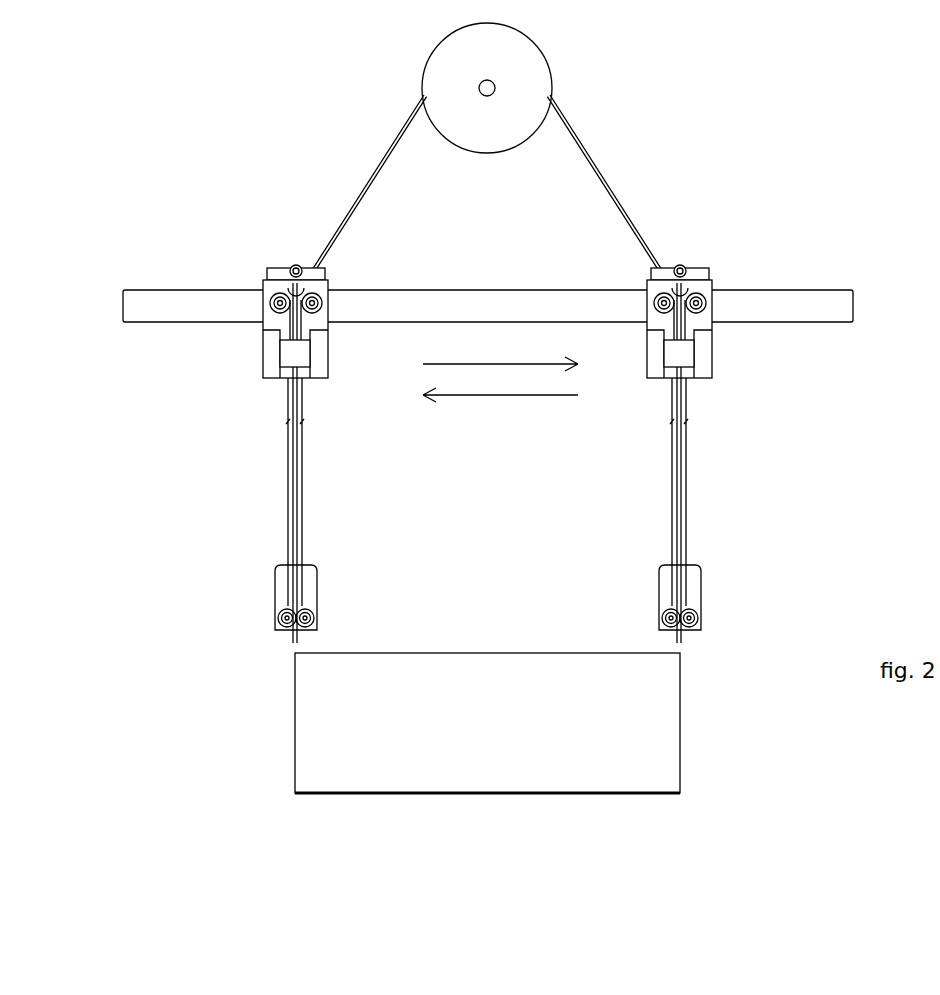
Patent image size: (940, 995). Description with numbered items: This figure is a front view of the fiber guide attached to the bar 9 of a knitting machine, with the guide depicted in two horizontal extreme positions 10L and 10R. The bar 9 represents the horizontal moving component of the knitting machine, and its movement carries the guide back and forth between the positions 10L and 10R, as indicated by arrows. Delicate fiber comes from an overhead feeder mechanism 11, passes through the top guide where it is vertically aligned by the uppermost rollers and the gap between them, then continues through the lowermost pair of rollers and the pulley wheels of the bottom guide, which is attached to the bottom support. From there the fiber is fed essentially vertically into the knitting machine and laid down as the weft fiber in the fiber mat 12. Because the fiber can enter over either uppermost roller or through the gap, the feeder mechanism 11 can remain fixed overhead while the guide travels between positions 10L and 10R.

The bar 9 is at (834, 291).
The position 10L is at (214, 156).
The position 10R is at (734, 159).
The feeder mechanism 11 is at (552, 59).
The fiber mat 12 is at (683, 718).